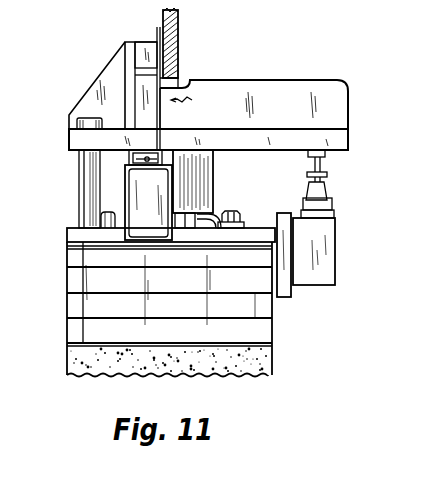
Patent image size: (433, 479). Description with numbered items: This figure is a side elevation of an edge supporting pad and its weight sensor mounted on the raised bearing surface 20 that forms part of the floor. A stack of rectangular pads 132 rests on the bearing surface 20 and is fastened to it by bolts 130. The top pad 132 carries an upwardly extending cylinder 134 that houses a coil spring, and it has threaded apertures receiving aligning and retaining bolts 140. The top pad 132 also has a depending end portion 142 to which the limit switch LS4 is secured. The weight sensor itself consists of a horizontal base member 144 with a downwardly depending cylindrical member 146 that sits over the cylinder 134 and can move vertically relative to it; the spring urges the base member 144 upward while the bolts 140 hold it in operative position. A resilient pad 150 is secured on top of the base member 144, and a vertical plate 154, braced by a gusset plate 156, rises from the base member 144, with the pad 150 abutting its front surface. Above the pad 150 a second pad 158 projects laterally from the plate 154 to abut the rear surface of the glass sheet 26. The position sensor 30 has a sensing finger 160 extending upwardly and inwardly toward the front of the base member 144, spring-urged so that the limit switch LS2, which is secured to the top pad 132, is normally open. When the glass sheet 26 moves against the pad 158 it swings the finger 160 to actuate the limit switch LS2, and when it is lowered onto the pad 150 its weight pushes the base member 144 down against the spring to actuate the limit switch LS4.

The bearing surface 20 is at (267, 358).
The glass sheet 26 is at (180, 19).
The position sensor 30 is at (222, 110).
The bolts 130 is at (238, 212).
The rectangular pads 132 is at (78, 237).
The cylinder 134 is at (215, 220).
The aligning and retaining bolts 140 is at (84, 193).
The depending end portion 142 is at (289, 298).
The base member 144 is at (344, 142).
The cylindrical member 146 is at (210, 164).
The resilient pad 150 is at (288, 79).
The vertical plate 154 is at (128, 62).
The gusset plate 156 is at (88, 97).
The second pad 158 is at (147, 30).
The sensing finger 160 is at (181, 84).
The limit switch LS2 is at (133, 181).
The limit switch LS4 is at (327, 277).